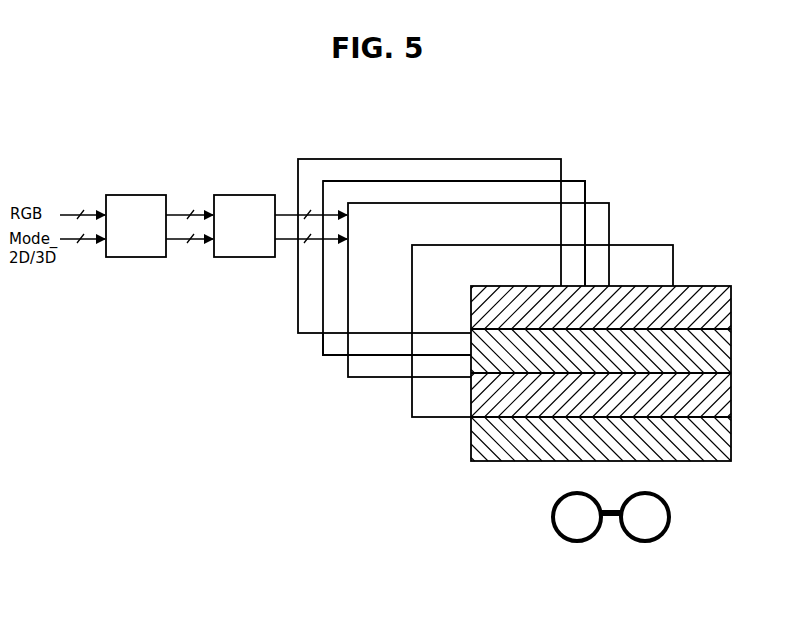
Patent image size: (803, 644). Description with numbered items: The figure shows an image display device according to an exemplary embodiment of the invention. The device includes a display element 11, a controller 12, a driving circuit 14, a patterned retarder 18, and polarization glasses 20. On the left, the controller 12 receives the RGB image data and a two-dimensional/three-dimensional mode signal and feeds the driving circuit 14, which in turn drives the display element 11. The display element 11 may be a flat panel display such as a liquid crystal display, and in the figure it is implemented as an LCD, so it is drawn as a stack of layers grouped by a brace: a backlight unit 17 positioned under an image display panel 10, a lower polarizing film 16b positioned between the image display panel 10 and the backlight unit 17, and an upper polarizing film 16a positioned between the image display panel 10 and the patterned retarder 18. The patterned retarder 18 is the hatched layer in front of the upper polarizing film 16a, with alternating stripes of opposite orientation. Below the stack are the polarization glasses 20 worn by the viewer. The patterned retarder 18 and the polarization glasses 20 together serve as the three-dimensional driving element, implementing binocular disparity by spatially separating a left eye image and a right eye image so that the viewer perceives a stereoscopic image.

The controller 12 is at (128, 235).
The driving circuit 14 is at (236, 235).
The backlight unit 17 is at (552, 157).
The lower polarizing film 16b is at (572, 181).
The image display panel 10 is at (601, 203).
The display element 11 is at (684, 201).
The upper polarizing film 16a is at (646, 245).
The patterned retarder 18 is at (703, 287).
The polarization glasses 20 is at (666, 499).